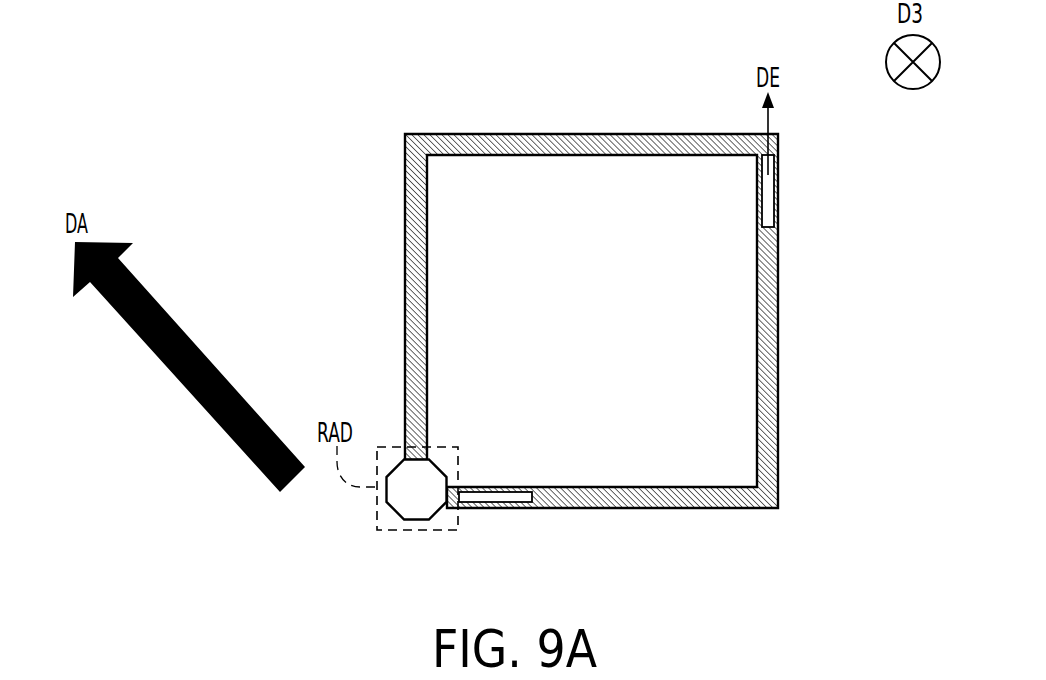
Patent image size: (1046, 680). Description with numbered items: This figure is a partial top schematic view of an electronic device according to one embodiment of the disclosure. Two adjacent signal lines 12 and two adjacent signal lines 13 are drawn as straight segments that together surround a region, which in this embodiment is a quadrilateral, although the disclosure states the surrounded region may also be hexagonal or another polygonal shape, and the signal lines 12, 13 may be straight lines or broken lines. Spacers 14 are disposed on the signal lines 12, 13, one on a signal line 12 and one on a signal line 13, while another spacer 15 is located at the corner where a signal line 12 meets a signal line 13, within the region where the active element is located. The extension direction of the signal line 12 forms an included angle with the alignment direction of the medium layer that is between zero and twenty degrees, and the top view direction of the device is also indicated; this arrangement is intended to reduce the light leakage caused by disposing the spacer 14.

The signal line 12 is at (405, 272).
The signal line 13 is at (590, 138).
The spacer 14 is at (770, 212).
The spacer 15 is at (408, 498).